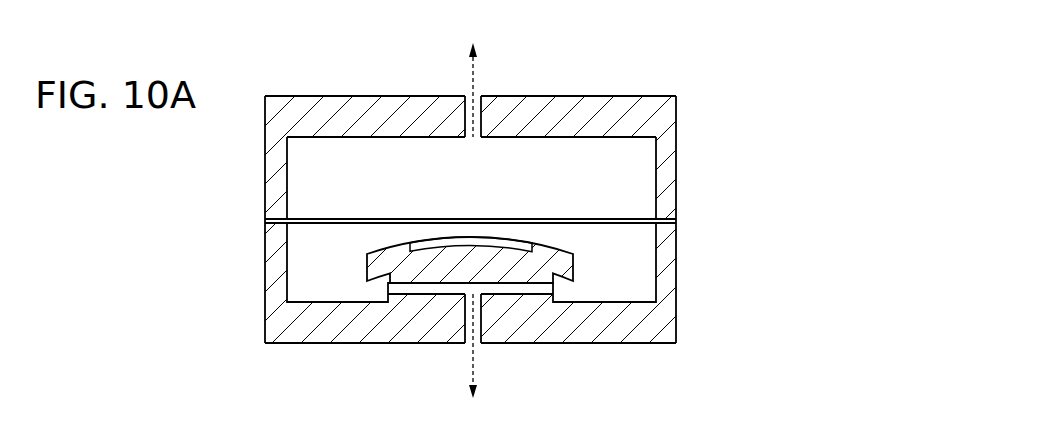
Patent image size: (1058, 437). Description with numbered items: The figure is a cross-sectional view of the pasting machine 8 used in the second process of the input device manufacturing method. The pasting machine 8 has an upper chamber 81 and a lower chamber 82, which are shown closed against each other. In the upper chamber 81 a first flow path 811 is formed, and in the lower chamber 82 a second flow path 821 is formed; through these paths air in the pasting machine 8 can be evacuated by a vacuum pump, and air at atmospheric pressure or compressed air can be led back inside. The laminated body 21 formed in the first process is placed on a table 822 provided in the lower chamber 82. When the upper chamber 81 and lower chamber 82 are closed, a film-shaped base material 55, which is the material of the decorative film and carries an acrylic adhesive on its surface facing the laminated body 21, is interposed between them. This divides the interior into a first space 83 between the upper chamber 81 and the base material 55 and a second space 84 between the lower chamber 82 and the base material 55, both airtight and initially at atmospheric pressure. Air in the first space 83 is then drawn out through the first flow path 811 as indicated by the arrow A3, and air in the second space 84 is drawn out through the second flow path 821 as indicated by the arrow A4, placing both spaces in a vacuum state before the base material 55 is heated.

The pasting machine 8 is at (509, 205).
The upper chamber 81 is at (659, 147).
The lower chamber 82 is at (662, 285).
The first space 83 is at (612, 158).
The second space 84 is at (619, 279).
The first flow path 811 is at (476, 119).
The second flow path 821 is at (474, 315).
The table 822 is at (418, 286).
The base material 55 is at (329, 219).
The laminated body 21 is at (358, 270).
The arrow A3 is at (471, 62).
The arrow A4 is at (472, 366).